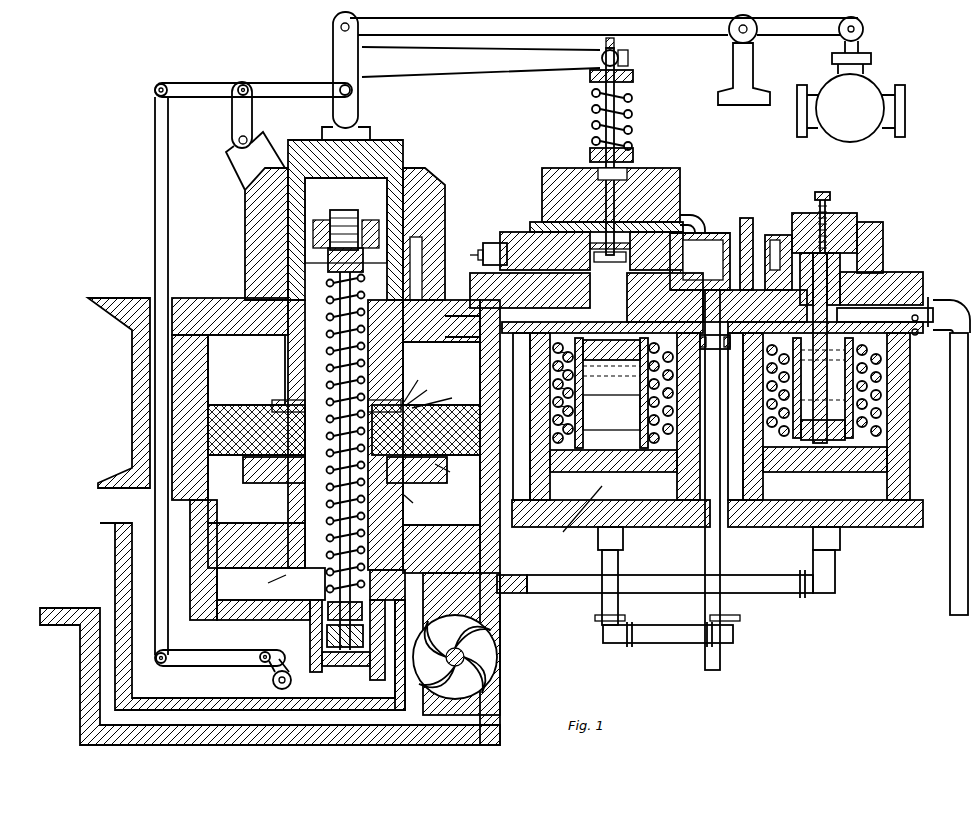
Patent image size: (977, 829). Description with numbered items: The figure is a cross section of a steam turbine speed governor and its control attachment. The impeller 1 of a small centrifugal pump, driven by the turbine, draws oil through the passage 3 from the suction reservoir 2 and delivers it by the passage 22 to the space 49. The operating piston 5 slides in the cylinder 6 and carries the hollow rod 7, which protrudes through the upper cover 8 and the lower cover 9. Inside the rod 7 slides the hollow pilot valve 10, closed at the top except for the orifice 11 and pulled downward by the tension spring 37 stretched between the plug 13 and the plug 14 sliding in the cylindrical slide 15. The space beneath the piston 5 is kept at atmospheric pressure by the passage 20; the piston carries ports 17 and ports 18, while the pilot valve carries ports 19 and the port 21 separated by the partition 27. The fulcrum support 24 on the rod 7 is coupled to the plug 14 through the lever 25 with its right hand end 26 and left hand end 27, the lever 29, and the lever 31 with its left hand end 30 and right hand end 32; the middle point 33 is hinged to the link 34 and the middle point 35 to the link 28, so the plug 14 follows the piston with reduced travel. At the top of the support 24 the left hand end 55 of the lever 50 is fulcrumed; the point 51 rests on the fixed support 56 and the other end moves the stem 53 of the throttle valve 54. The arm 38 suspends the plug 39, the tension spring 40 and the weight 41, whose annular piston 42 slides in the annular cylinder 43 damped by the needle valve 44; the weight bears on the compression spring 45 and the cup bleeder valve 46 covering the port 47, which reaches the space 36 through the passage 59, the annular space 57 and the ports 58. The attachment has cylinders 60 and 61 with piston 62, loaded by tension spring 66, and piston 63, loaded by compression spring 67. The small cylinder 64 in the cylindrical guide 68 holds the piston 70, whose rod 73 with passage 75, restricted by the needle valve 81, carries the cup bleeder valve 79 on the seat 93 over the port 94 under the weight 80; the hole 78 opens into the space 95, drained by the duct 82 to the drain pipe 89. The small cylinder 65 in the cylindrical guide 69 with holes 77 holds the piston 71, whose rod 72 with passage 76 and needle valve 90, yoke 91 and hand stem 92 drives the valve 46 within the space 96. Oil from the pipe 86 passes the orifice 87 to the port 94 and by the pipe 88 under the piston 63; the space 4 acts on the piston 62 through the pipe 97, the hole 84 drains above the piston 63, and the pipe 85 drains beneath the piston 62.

The impeller 1 is at (497, 653).
The suction reservoir 2 is at (72, 583).
The passage 3 is at (362, 726).
The space 4 is at (507, 592).
The operating piston 5 is at (480, 425).
The cylinder 6 is at (490, 487).
The hollow rod 7 is at (300, 284).
The upper cover 8 is at (262, 218).
The lower cover 9 is at (500, 553).
The pilot valve 10 is at (310, 302).
The orifice 11 is at (368, 218).
The plug 13 is at (330, 258).
The plug 14 is at (322, 676).
The cylindrical slide 15 is at (379, 683).
The ports 17 is at (278, 412).
The ports 18 is at (243, 460).
The ports 19 is at (287, 403).
The passage 20 is at (180, 508).
The port 21 is at (303, 473).
The passage 22 is at (398, 622).
The fulcrum support 24 is at (356, 125).
The lever 25 is at (198, 85).
The right hand end 26 is at (352, 90).
The partition 27 is at (167, 84).
The link 28 is at (248, 115).
The lever 29 is at (166, 256).
The left hand end 30 is at (160, 665).
The lever 31 is at (220, 658).
The right hand end 32 is at (345, 668).
The middle point 33 is at (262, 663).
The link 34 is at (274, 684).
The middle point 35 is at (248, 85).
The space 36 is at (355, 192).
The tension spring 37 is at (328, 553).
The arm 38 is at (518, 66).
The plug 39 is at (630, 80).
The tension spring 40 is at (630, 110).
The weight 41 is at (671, 176).
The annular piston 42 is at (692, 244).
The annular cylinder 43 is at (733, 230).
The needle valve 44 is at (486, 243).
The compression spring 45 is at (657, 240).
The cup bleeder valve 46 is at (660, 252).
The port 47 is at (536, 232).
The space 49 is at (286, 592).
The lever 50 is at (548, 28).
The point 51 is at (753, 24).
The stem 53 is at (864, 26).
The throttle valve 54 is at (858, 90).
The left hand end 55 is at (333, 22).
The fixed support 56 is at (752, 72).
The annular space 57 is at (404, 218).
The ports 58 is at (400, 240).
The passage 59 is at (421, 257).
The cylinder 60 is at (897, 448).
The cylinder 61 is at (545, 466).
The piston 62 is at (880, 470).
The piston 63 is at (549, 456).
The small cylinder 64 is at (880, 421).
The small cylinder 65 is at (577, 405).
The tension spring 66 is at (880, 430).
The compression spring 67 is at (490, 368).
The cylindrical guide 68 is at (882, 366).
The cylindrical guide 69 is at (552, 353).
The piston 70 is at (880, 401).
The piston 71 is at (573, 388).
The rod 72 is at (578, 372).
The rod 73 is at (886, 381).
The passage 75 is at (871, 306).
The passage 76 is at (580, 224).
The holes 77 is at (490, 345).
The hole 78 is at (905, 350).
The cup bleeder valve 79 is at (873, 259).
The weight 80 is at (838, 216).
The needle valve 81 is at (831, 199).
The duct 82 is at (757, 230).
The hole 84 is at (692, 352).
The pipe 85 is at (745, 353).
The pipe 86 is at (953, 552).
The orifice 87 is at (929, 312).
The pipe 88 is at (656, 631).
The drain pipe 89 is at (708, 656).
The needle valve 90 is at (641, 205).
The yoke 91 is at (656, 221).
The stem 92 is at (619, 55).
The seat 93 is at (862, 271).
The port 94 is at (822, 305).
The space 95 is at (868, 234).
The space 96 is at (572, 236).
The pipe 97 is at (793, 586).